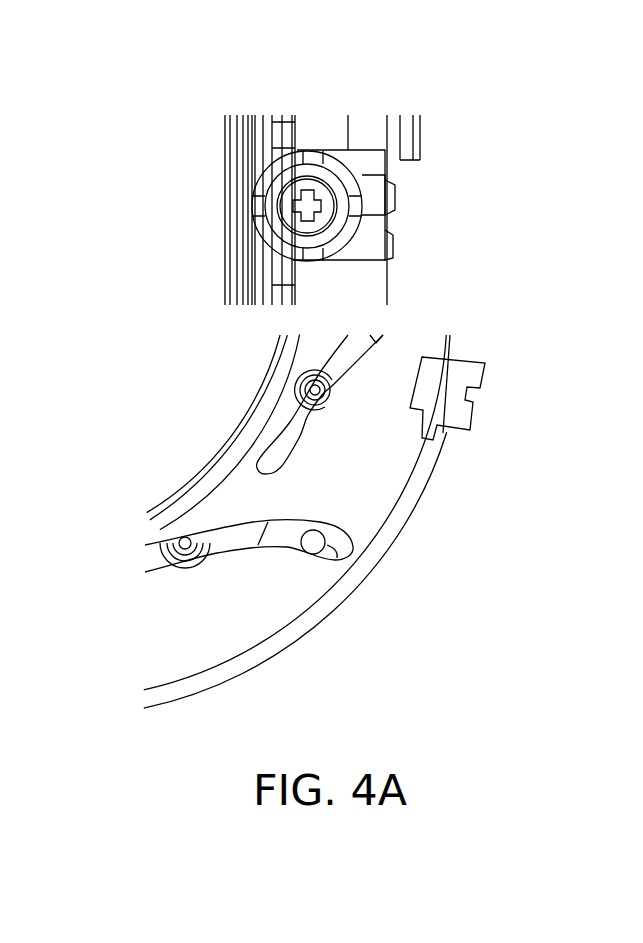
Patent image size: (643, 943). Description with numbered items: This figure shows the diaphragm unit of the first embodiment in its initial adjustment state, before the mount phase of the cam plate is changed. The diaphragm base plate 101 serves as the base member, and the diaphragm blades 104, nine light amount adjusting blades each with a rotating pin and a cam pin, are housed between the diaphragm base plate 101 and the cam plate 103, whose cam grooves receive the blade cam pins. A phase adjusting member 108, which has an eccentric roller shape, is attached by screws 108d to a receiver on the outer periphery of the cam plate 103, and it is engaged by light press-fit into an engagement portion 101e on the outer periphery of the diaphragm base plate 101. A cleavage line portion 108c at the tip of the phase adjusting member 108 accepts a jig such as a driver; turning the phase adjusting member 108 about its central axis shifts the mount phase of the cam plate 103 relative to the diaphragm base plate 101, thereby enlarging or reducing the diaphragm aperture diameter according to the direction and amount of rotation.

The diaphragm base plate 101 is at (413, 498).
The engagement portion 101e is at (315, 150).
The cam plate 103 is at (415, 342).
The diaphragm blades 104 is at (260, 400).
The phase adjusting member 108 is at (348, 178).
The cleavage line portion 108c is at (358, 212).
The screws 108d is at (283, 205).